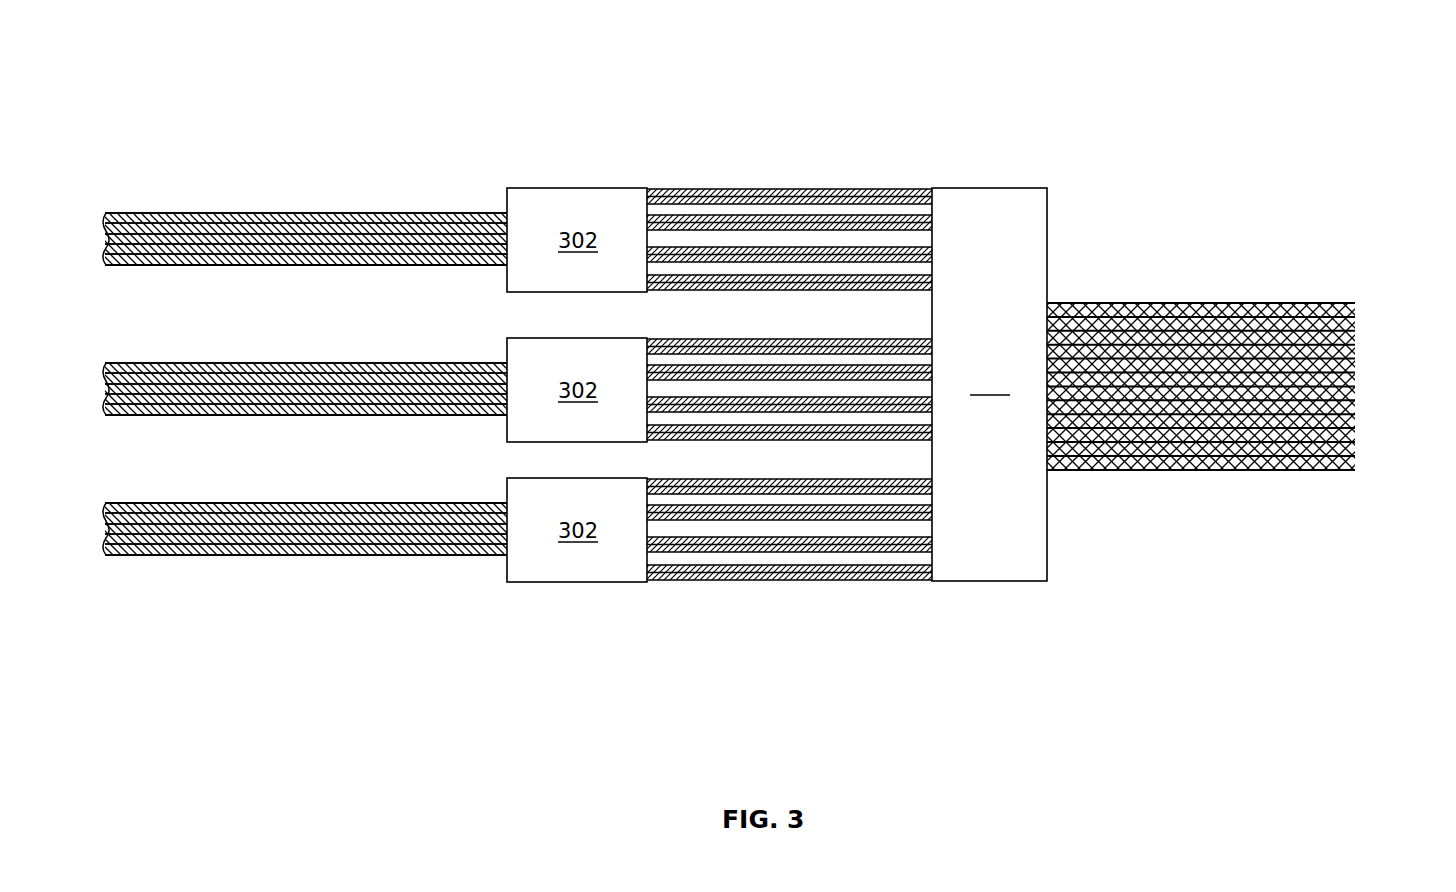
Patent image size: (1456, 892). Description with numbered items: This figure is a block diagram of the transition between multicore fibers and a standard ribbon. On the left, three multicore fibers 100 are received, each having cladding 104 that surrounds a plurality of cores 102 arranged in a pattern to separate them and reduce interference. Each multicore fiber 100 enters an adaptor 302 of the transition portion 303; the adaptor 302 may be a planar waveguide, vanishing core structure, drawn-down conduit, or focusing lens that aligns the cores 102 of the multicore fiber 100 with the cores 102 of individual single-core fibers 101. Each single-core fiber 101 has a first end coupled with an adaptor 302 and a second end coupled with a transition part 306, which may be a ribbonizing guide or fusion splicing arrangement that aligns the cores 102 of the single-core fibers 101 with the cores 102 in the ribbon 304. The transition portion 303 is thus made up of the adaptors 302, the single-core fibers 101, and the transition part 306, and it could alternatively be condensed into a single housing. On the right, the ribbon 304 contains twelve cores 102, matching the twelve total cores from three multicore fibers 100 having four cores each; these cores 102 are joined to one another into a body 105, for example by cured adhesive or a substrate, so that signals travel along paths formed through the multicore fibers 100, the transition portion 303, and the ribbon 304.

The multicore fiber 100 is at (158, 214).
The single-core fiber 101 is at (735, 203).
The core 102 is at (291, 222).
The cladding 104 is at (322, 217).
The body 105 is at (1355, 470).
The adaptor 302 is at (577, 385).
The transition portion 303 is at (803, 80).
The ribbon 304 is at (1219, 262).
The transition part 306 is at (989, 384).